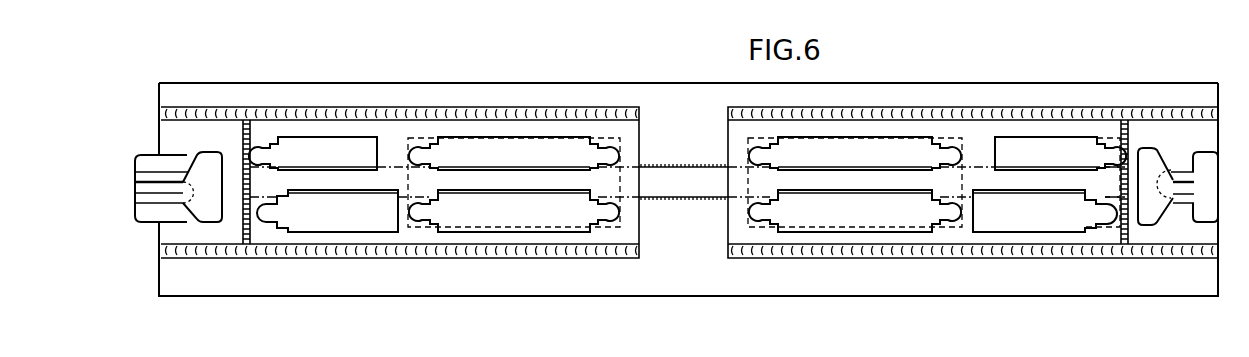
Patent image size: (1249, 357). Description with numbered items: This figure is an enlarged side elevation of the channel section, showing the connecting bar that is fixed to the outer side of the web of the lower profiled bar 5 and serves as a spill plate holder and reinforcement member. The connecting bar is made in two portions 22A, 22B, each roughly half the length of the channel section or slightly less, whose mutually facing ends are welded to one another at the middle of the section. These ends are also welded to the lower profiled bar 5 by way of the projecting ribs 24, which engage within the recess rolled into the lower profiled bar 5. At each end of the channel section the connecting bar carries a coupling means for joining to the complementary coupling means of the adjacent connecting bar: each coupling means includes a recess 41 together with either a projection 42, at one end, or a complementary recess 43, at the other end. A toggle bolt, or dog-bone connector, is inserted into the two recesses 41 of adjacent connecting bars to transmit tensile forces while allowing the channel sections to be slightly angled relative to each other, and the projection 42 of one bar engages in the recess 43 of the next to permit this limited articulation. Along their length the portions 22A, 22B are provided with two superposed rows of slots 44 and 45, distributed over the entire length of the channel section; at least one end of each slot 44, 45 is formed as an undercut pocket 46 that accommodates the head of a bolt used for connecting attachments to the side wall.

The lower profiled bar 5 is at (705, 286).
The first portion of connecting bar 22A is at (427, 110).
The second portion of connecting bar 22B is at (925, 116).
The ribs 24 is at (702, 183).
The recess 41 is at (216, 218).
The projection 42 is at (152, 215).
The complementary recess 43 is at (1207, 210).
The slots 44 is at (333, 146).
The slots 45 is at (358, 218).
The undercut pocket 46 is at (601, 140).